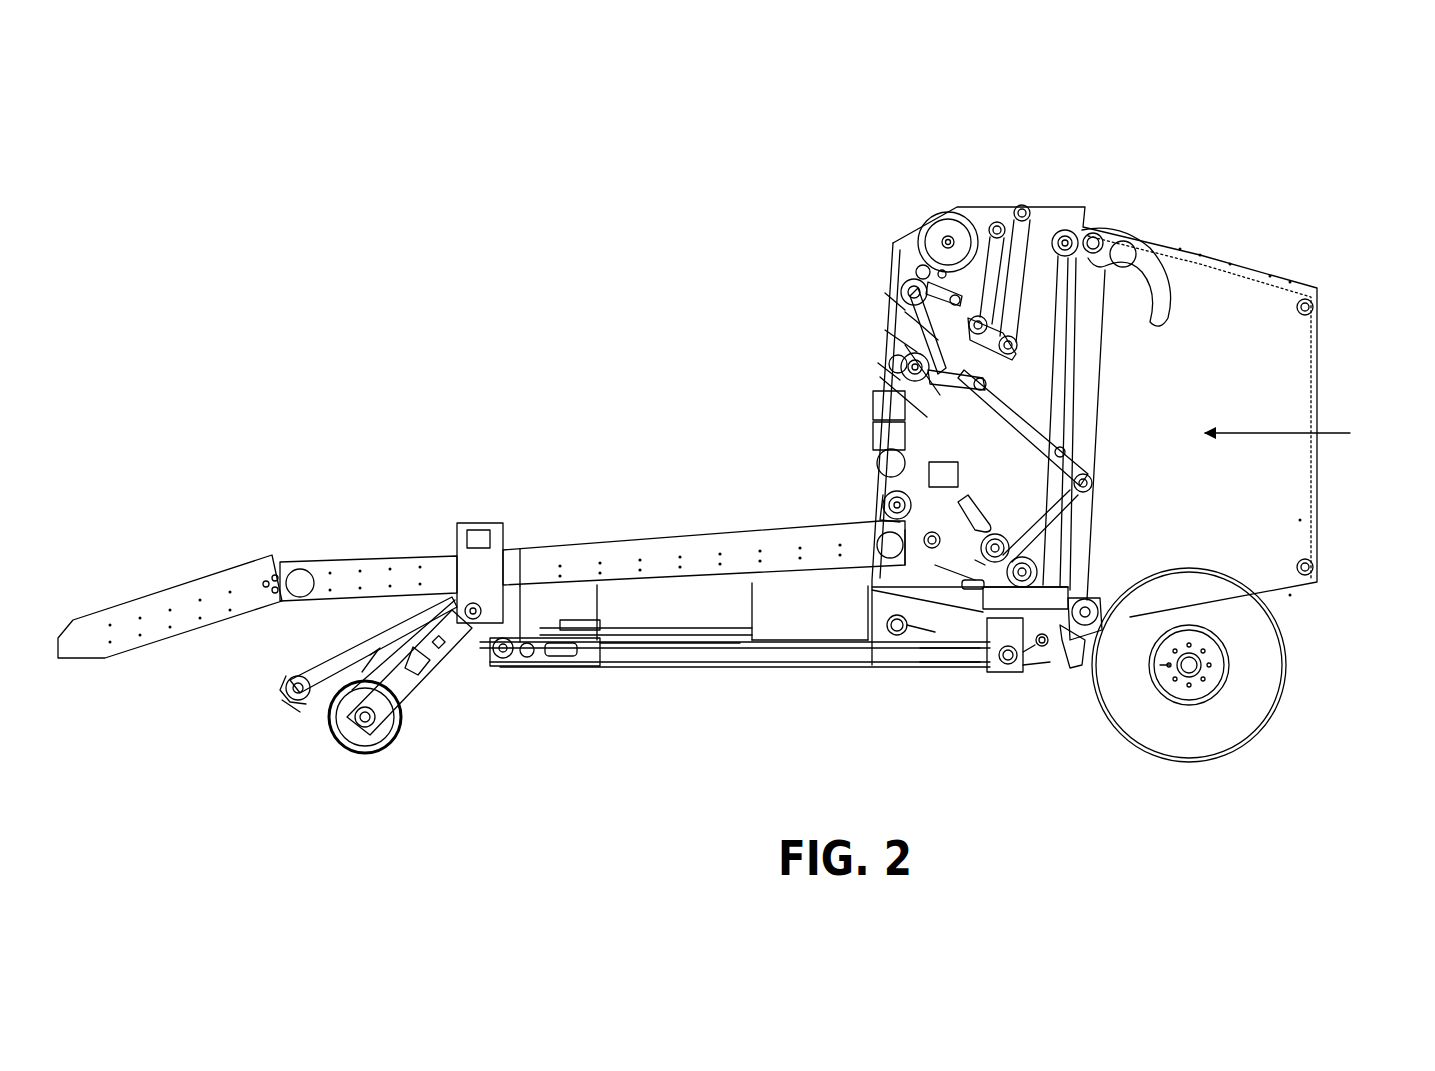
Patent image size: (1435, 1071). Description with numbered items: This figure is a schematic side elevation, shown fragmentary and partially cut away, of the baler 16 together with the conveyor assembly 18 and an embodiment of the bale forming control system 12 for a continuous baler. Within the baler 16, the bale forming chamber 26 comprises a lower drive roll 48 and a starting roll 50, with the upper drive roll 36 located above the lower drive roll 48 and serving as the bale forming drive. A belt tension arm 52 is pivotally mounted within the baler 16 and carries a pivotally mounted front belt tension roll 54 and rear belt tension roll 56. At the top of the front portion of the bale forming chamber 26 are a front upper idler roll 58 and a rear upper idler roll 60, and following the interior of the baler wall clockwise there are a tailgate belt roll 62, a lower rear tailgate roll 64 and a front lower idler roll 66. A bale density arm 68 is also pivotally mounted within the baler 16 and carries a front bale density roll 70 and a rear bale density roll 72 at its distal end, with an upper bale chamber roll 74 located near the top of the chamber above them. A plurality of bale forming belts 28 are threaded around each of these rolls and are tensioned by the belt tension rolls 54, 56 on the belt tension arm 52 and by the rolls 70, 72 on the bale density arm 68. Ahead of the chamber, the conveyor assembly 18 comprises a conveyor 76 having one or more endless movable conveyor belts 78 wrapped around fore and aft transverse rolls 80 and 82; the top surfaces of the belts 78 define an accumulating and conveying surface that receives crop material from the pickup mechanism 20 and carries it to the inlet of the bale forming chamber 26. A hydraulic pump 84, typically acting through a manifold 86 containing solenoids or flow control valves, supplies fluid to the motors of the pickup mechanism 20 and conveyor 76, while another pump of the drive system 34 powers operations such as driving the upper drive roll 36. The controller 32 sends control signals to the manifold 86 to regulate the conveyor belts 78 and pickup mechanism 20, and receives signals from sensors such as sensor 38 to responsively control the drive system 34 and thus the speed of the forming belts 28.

The bale forming control system 12 is at (783, 312).
The baler 16 is at (1320, 393).
The conveyor assembly 18 is at (580, 525).
The pickup mechanism 20 is at (455, 688).
The bale forming chamber 26 is at (1292, 434).
The bale forming belts 28 is at (970, 497).
The controller 32 is at (873, 427).
The drive system 34 is at (873, 400).
The upper drive roll 36 is at (938, 212).
The sensor 38 is at (899, 637).
The lower drive roll 48 is at (996, 536).
The starting roll 50 is at (1026, 562).
The belt tension arm 52 is at (910, 292).
The front belt tension roll 54 is at (978, 316).
The rear belt tension roll 56 is at (1012, 338).
The front upper idler roll 58 is at (999, 222).
The rear upper idler roll 60 is at (1024, 206).
The tailgate belt roll 62 is at (1317, 290).
The lower rear tailgate roll 64 is at (1313, 565).
The front lower idler roll 66 is at (1087, 600).
The bale density arm 68 is at (1012, 423).
The front bale density roll 70 is at (1052, 435).
The rear bale density roll 72 is at (1093, 481).
The upper bale chamber roll 74 is at (1100, 231).
The conveyor 76 is at (720, 630).
The conveyor belts 78 is at (775, 638).
The fore roll 80 is at (497, 656).
The aft roll 82 is at (1010, 668).
The hydraulic pump 84 is at (877, 463).
The manifold 86 is at (929, 477).